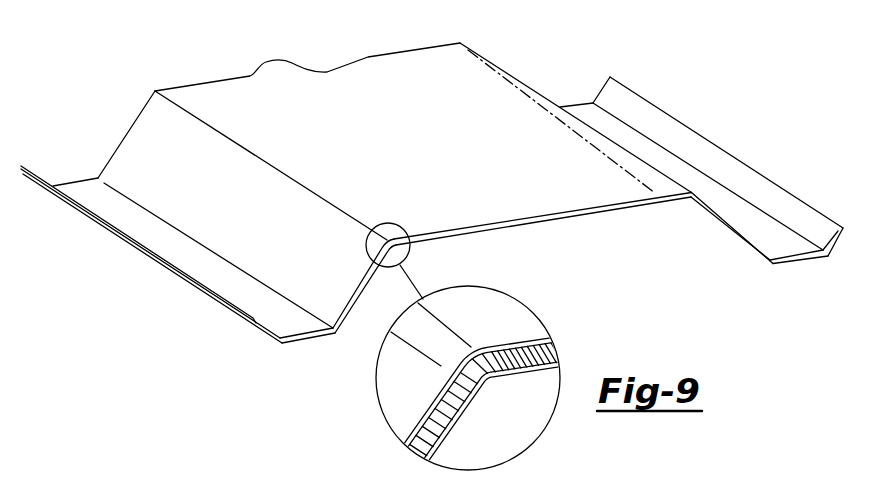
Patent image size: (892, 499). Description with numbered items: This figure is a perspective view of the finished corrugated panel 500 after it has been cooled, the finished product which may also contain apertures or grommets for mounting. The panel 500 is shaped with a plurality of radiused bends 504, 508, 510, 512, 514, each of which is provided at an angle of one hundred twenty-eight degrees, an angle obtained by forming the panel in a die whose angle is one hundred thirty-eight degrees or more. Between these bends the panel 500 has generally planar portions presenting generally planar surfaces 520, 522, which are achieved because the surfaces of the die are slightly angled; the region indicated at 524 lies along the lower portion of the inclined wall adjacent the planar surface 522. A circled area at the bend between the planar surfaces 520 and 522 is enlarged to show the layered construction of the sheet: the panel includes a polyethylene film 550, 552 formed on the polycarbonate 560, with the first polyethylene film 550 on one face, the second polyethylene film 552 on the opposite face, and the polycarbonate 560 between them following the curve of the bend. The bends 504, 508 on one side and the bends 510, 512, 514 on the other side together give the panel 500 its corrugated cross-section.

The panel 500 is at (197, 46).
The radiused bend 504 is at (280, 342).
The radiused bend 508 is at (336, 334).
The radiused bend 510 is at (692, 193).
The radiused bend 512 is at (770, 263).
The radiused bend 514 is at (829, 257).
The generally planar surface 520 is at (398, 137).
The generally planar surface 522 is at (236, 202).
The lower wall portion 524 is at (227, 276).
The polyethylene film 550 is at (507, 345).
The polyethylene film 552 is at (538, 372).
The polycarbonate 560 is at (556, 357).